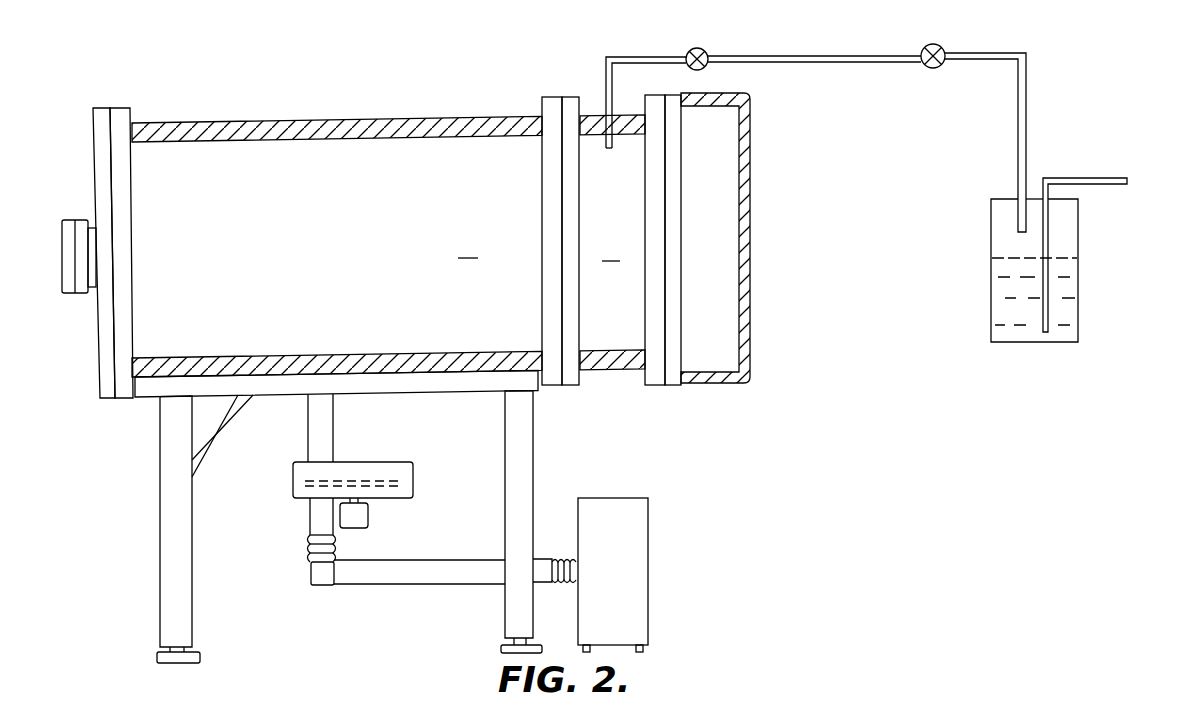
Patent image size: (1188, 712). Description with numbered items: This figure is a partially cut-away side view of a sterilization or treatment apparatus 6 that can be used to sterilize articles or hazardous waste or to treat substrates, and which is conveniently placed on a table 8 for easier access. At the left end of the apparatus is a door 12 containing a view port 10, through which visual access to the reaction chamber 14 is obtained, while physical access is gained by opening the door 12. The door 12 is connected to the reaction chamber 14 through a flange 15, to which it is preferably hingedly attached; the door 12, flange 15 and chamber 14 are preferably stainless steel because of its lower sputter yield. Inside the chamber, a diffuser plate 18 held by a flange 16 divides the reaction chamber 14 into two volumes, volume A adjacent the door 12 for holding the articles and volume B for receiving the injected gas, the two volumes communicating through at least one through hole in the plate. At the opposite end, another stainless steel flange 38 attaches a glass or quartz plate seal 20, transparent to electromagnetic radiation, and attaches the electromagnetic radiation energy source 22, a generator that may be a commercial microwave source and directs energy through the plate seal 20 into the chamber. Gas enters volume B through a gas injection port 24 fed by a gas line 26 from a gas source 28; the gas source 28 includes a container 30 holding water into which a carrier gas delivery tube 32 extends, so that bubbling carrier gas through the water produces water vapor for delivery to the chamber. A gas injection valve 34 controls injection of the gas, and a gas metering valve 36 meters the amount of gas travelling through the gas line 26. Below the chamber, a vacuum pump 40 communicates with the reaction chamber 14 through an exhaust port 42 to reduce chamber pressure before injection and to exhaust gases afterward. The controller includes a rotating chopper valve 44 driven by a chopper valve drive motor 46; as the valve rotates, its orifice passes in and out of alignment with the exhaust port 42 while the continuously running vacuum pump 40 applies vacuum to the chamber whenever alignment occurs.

The apparatus 6 is at (373, 62).
The table 8 is at (160, 512).
The view port 10 is at (64, 220).
The door 12 is at (102, 108).
The reaction chamber 14 is at (322, 258).
The flange 15 is at (123, 108).
The flange 16 is at (548, 97).
The diffuser plate 18 is at (567, 97).
The plate seal 20 is at (678, 385).
The electromagnetic radiation energy source 22 is at (727, 261).
The gas injection port 24 is at (606, 148).
The gas line 26 is at (812, 52).
The gas source 28 is at (1078, 232).
The container 30 is at (991, 292).
The carrier gas delivery tube 32 is at (1095, 178).
The gas injection valve 34 is at (706, 50).
The gas metering valve 36 is at (945, 49).
The flange 38 is at (661, 385).
The vacuum pump 40 is at (605, 498).
The exhaust port 42 is at (308, 430).
The rotating chopper valve 44 is at (345, 480).
The chopper valve drive motor 46 is at (368, 517).